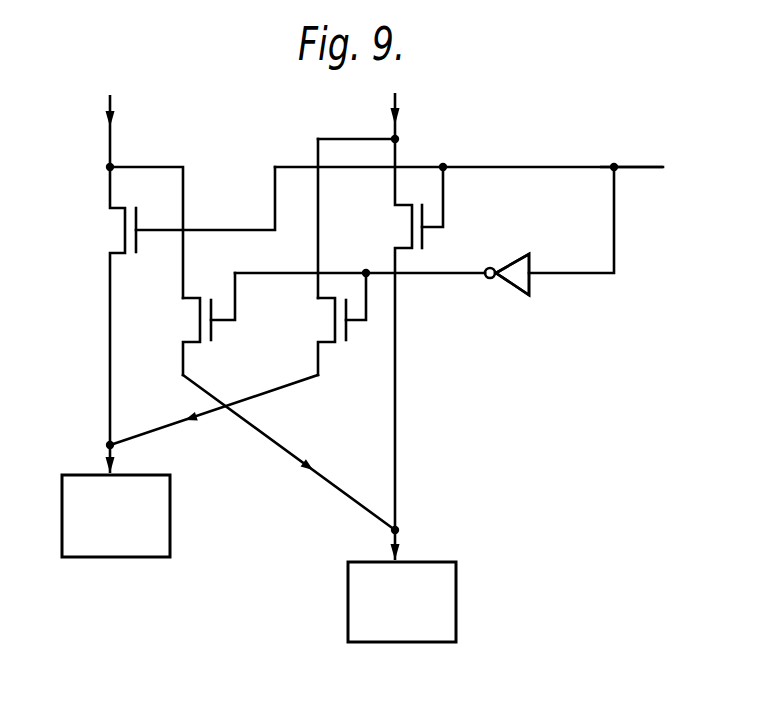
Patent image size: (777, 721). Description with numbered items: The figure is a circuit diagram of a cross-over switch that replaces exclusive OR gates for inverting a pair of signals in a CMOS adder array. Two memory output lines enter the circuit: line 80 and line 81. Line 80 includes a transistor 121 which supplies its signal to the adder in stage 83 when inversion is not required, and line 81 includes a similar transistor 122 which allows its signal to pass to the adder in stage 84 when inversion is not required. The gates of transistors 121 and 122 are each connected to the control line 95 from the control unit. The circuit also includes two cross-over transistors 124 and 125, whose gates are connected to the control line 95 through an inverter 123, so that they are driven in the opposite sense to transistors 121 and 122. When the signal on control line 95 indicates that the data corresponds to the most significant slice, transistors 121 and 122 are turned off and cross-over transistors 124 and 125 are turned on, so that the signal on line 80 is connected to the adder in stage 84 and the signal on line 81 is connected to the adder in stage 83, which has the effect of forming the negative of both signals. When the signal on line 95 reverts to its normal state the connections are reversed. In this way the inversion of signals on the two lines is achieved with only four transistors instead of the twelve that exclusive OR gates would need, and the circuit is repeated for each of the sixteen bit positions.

The line 80 is at (107, 130).
The line 81 is at (397, 128).
The control line 95 is at (638, 163).
The transistor 121 is at (126, 237).
The transistor 122 is at (412, 237).
The inverter 123 is at (512, 283).
The cross-over transistor 124 is at (200, 322).
The cross-over transistor 125 is at (332, 324).
The stage 83 is at (116, 516).
The stage 84 is at (402, 602).